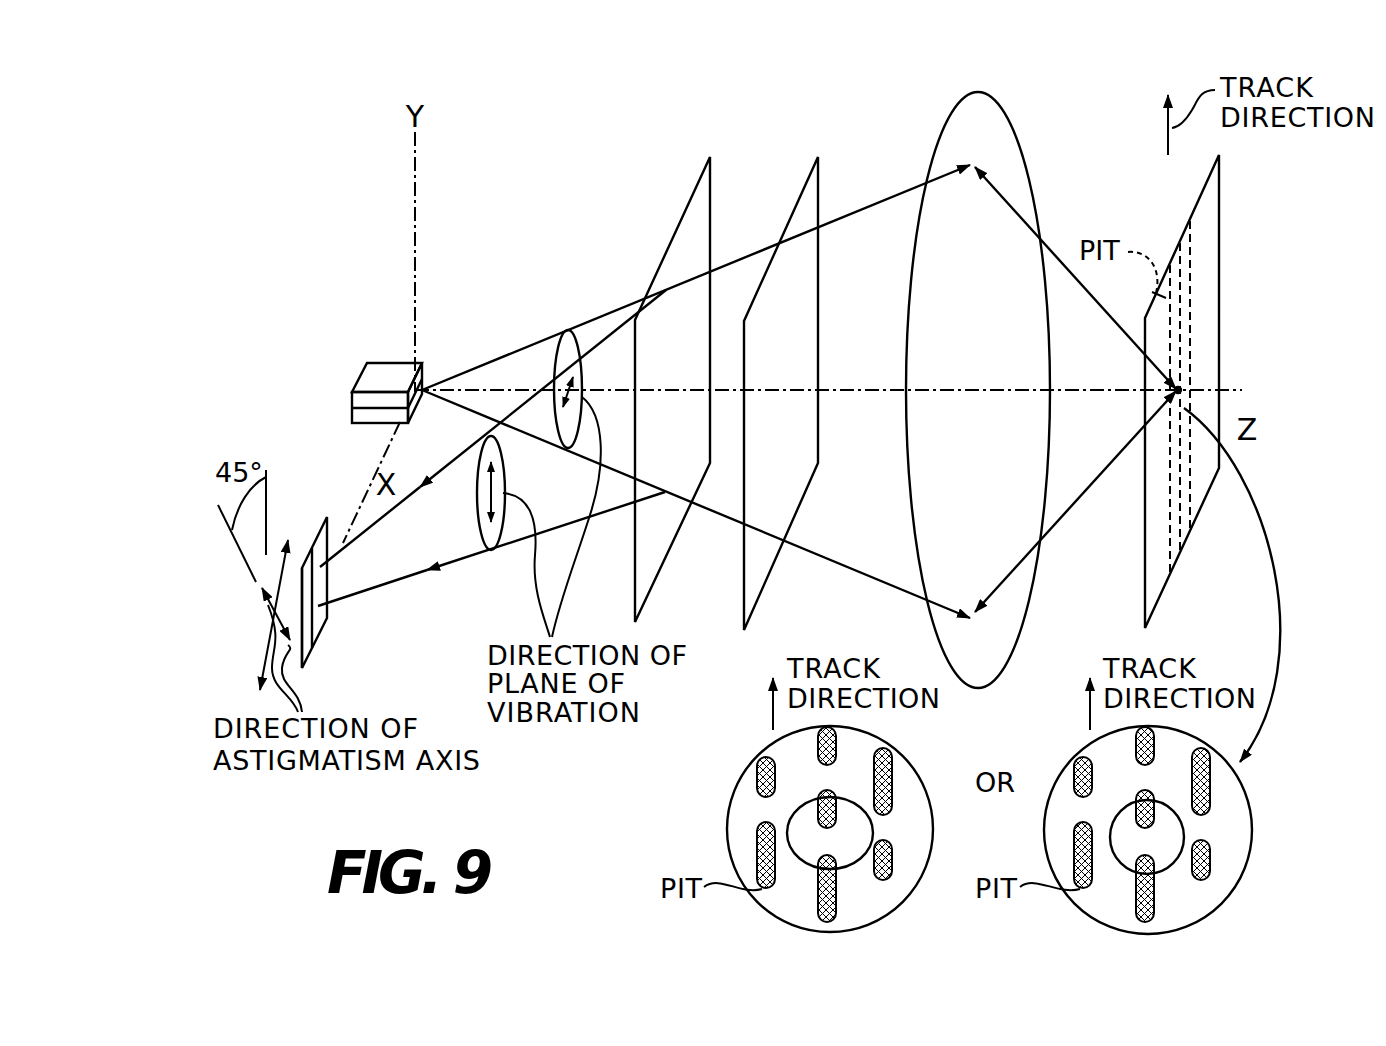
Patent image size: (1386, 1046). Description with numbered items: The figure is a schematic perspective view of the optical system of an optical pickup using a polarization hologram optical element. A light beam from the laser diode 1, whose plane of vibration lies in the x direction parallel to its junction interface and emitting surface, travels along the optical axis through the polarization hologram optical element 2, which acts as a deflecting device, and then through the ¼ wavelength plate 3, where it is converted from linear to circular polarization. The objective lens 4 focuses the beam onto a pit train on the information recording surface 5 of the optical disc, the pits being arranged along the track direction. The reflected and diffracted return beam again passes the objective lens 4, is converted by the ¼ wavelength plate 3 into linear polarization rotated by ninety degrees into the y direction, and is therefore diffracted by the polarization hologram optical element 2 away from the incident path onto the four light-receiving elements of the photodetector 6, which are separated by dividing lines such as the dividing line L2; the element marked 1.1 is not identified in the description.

The laser diode 1 is at (351, 402).
The astigmatism generating element 1.1 is at (315, 633).
The polarization hologram optical element 2 is at (710, 157).
The ¼ wavelength plate 3 is at (818, 157).
The objective lens 4 is at (977, 93).
The information recording surface 5 is at (1151, 607).
The photodetector 6 is at (320, 529).
The dividing line L2 is at (330, 583).